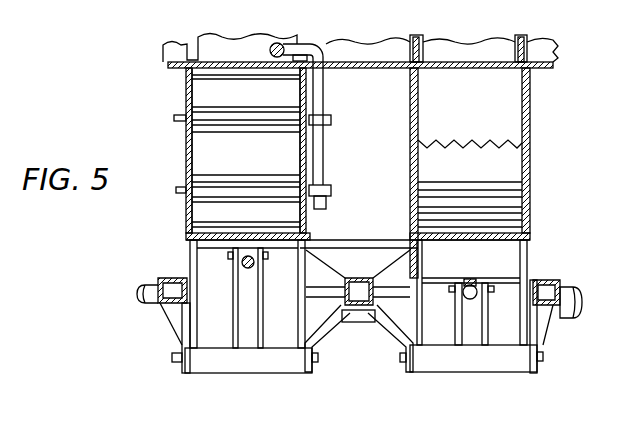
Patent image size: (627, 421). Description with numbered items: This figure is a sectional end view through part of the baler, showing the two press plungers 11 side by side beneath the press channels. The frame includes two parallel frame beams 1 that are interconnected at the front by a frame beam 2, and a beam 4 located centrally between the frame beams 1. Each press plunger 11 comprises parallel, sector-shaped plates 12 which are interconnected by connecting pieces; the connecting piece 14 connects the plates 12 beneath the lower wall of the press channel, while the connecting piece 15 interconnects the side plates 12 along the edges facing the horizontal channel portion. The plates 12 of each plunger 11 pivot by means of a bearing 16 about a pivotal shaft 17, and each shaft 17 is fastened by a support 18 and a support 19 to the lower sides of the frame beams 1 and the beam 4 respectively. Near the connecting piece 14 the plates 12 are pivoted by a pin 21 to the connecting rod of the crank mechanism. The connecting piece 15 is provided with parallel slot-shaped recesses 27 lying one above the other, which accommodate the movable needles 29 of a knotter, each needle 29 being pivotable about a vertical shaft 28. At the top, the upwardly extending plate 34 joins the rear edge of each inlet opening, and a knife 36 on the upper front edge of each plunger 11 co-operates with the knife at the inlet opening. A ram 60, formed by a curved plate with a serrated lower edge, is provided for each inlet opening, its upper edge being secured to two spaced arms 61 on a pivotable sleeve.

The frame beam 1 is at (160, 290).
The frame beam 2 is at (142, 300).
The beam 4 is at (373, 276).
The press plunger 11 is at (186, 142).
The sector-shaped plate 12 is at (198, 318).
The connecting piece 14 is at (212, 250).
The connecting piece 15 is at (194, 162).
The bearing 16 is at (219, 372).
The pivotal shaft 17 is at (173, 358).
The support 18 is at (182, 368).
The support 19 is at (320, 337).
The pin 21 is at (264, 255).
The slot-shaped recess 27 is at (255, 127).
The vertical shaft 28 is at (324, 101).
The needle 29 is at (175, 116).
The plate 34 is at (375, 44).
The knife 36 is at (229, 78).
The ram 60 is at (520, 130).
The arm 61 is at (419, 40).